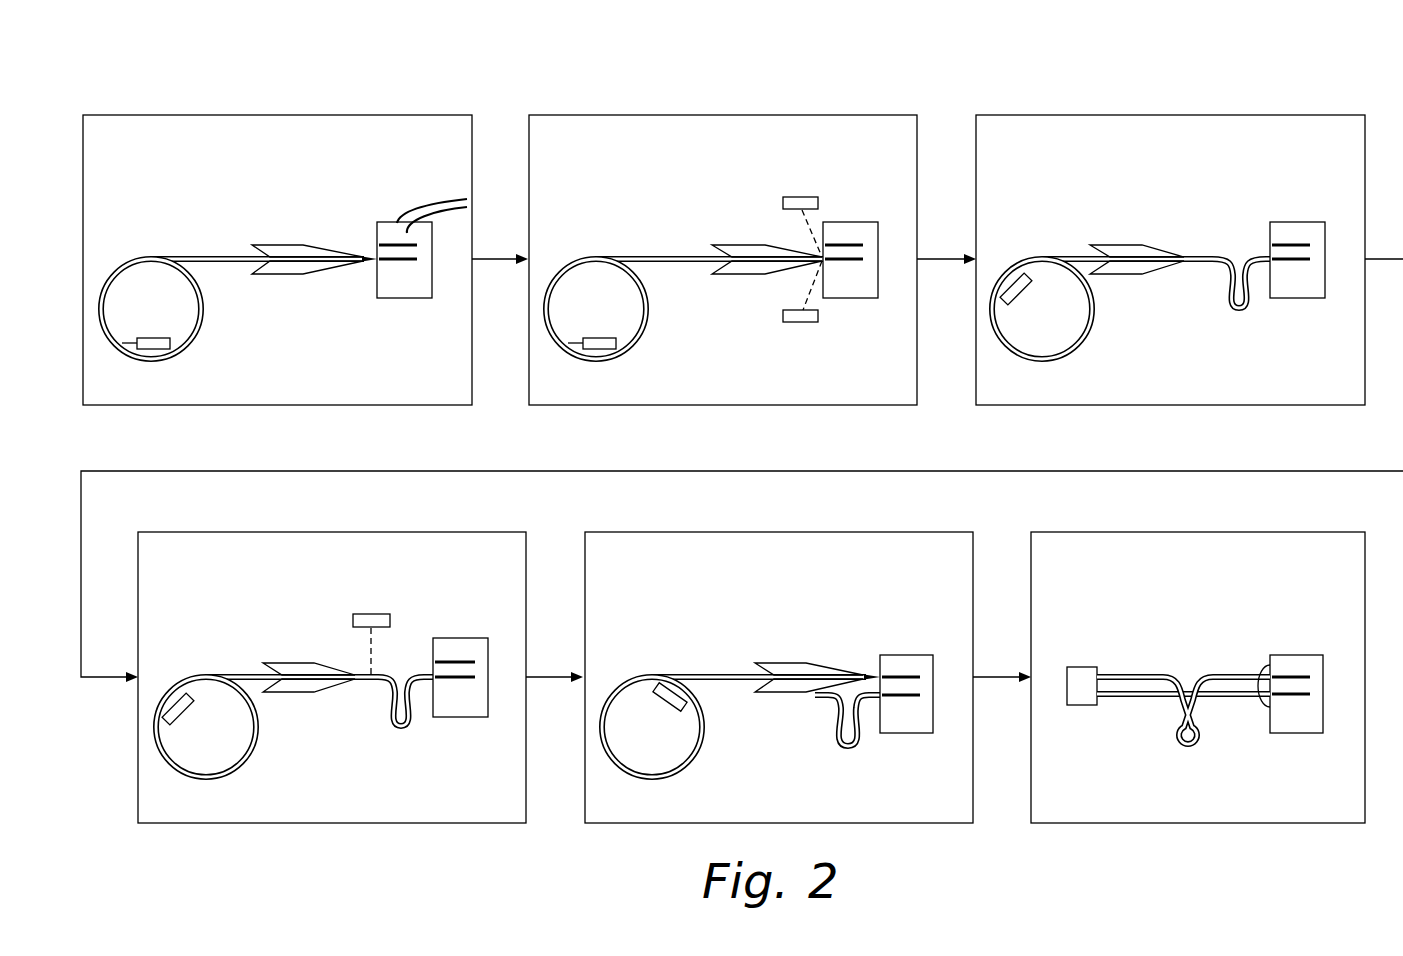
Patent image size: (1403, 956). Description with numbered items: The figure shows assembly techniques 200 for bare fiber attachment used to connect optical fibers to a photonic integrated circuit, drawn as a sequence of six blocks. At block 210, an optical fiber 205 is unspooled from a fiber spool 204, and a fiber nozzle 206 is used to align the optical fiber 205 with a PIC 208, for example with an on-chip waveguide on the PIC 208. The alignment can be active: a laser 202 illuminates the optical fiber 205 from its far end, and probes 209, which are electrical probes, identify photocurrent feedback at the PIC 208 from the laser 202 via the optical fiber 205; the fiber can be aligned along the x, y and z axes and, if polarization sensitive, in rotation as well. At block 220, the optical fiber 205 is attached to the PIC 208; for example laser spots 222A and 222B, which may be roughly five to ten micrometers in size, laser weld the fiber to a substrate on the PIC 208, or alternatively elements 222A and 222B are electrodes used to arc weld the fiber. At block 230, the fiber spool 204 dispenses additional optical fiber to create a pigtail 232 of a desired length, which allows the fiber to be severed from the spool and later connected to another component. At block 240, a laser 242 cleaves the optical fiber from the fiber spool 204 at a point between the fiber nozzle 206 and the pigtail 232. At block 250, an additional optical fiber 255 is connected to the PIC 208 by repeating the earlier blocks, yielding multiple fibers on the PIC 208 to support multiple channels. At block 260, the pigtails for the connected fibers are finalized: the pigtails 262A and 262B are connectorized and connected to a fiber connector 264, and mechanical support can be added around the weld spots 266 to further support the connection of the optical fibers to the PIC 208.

The assembly techniques 200 is at (172, 61).
The block 210 is at (143, 158).
The block 220 is at (589, 158).
The block 230 is at (1036, 158).
The block 240 is at (198, 575).
The block 250 is at (645, 575).
The block 260 is at (1091, 575).
The laser 202 is at (155, 338).
The fiber spool 204 is at (183, 312).
The optical fiber 205 is at (222, 257).
The fiber nozzle 206 is at (287, 274).
The PIC 208 is at (402, 298).
The probes 209 is at (437, 202).
The laser spot 222A is at (800, 197).
The laser spot 222B is at (798, 323).
The pigtail 232 is at (1239, 312).
The laser 242 is at (371, 614).
The additional optical fiber 255 is at (723, 673).
The pigtail 262A is at (1145, 698).
The pigtail 262B is at (1147, 675).
The fiber connector 264 is at (1077, 667).
The weld spots 266 is at (1263, 666).